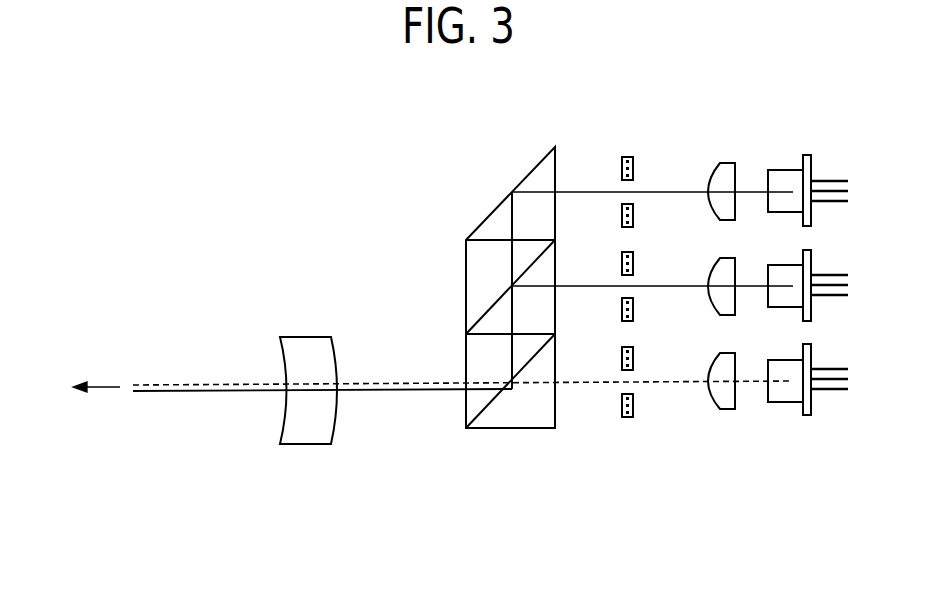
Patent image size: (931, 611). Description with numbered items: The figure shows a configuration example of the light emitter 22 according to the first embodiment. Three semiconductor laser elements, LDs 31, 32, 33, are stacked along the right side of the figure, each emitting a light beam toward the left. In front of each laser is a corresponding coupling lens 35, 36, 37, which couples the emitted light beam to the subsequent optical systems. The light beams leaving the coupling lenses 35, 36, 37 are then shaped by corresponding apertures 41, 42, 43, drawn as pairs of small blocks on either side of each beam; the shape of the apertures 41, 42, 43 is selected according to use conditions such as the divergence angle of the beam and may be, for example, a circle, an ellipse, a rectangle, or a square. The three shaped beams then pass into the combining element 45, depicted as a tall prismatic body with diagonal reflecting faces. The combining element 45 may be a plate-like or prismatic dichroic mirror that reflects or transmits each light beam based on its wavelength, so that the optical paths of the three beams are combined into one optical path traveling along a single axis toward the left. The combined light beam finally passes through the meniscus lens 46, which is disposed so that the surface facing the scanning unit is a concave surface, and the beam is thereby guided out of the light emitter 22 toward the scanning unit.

The light emitter 22 is at (437, 130).
The LD (semiconductor laser element) 31 is at (788, 170).
The LD (semiconductor laser element) 32 is at (788, 265).
The LD (semiconductor laser element) 33 is at (788, 360).
The coupling lens 35 is at (718, 163).
The coupling lens 36 is at (718, 258).
The coupling lens 37 is at (718, 353).
The aperture 41 is at (622, 182).
The aperture 42 is at (622, 277).
The aperture 43 is at (622, 372).
The combining element 45 is at (522, 180).
The meniscus lens 46 is at (313, 337).